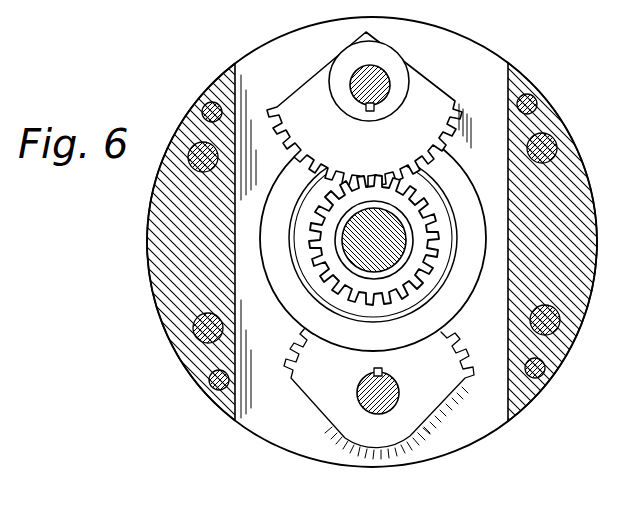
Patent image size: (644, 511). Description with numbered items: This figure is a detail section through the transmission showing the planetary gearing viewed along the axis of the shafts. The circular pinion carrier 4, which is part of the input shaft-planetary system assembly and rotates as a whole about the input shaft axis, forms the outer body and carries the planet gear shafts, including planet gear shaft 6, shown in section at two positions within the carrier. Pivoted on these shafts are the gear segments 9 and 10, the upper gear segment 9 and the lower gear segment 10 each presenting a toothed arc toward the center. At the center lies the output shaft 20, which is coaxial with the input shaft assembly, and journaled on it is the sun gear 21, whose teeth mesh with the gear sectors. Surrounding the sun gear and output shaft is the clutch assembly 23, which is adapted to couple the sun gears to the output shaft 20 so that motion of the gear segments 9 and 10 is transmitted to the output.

The pinion carrier 4 is at (236, 66).
The planet gear shaft 6 is at (378, 75).
The gear segment 9 is at (310, 114).
The gear segment 10 is at (323, 390).
The output shaft 20 is at (398, 264).
The sun gear 21 is at (423, 202).
The clutch assembly 23 is at (278, 306).